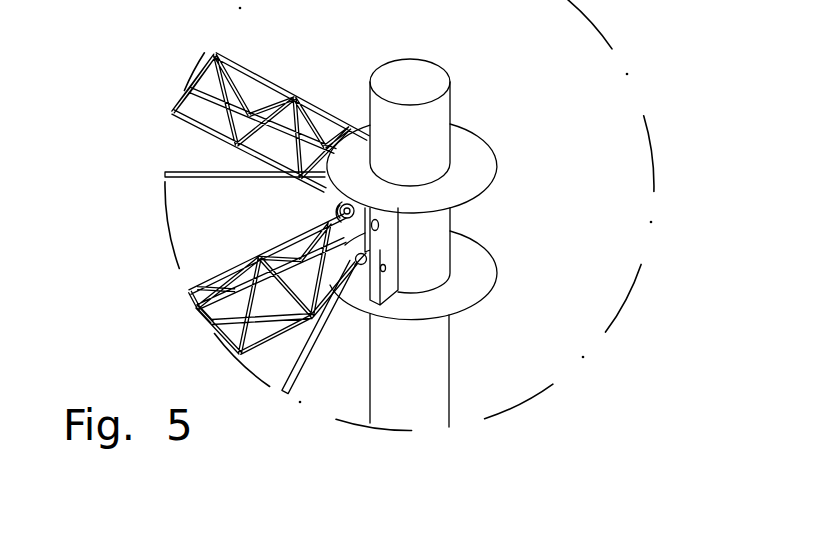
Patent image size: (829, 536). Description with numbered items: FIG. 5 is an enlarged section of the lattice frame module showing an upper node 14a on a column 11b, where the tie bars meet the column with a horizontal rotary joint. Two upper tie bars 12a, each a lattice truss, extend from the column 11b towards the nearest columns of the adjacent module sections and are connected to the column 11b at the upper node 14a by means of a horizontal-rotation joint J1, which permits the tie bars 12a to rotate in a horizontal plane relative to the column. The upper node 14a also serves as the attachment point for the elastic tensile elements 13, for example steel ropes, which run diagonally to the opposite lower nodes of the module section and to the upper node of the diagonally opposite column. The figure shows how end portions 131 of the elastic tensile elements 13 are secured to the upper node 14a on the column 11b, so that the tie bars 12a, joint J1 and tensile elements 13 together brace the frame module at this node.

The column 11b is at (438, 381).
The upper tie bar 12a is at (197, 83).
The elastic tensile element 13 is at (210, 172).
The end portion 131 is at (372, 322).
The upper node 14a is at (600, 193).
The horizontal-rotation joint J1 is at (345, 212).